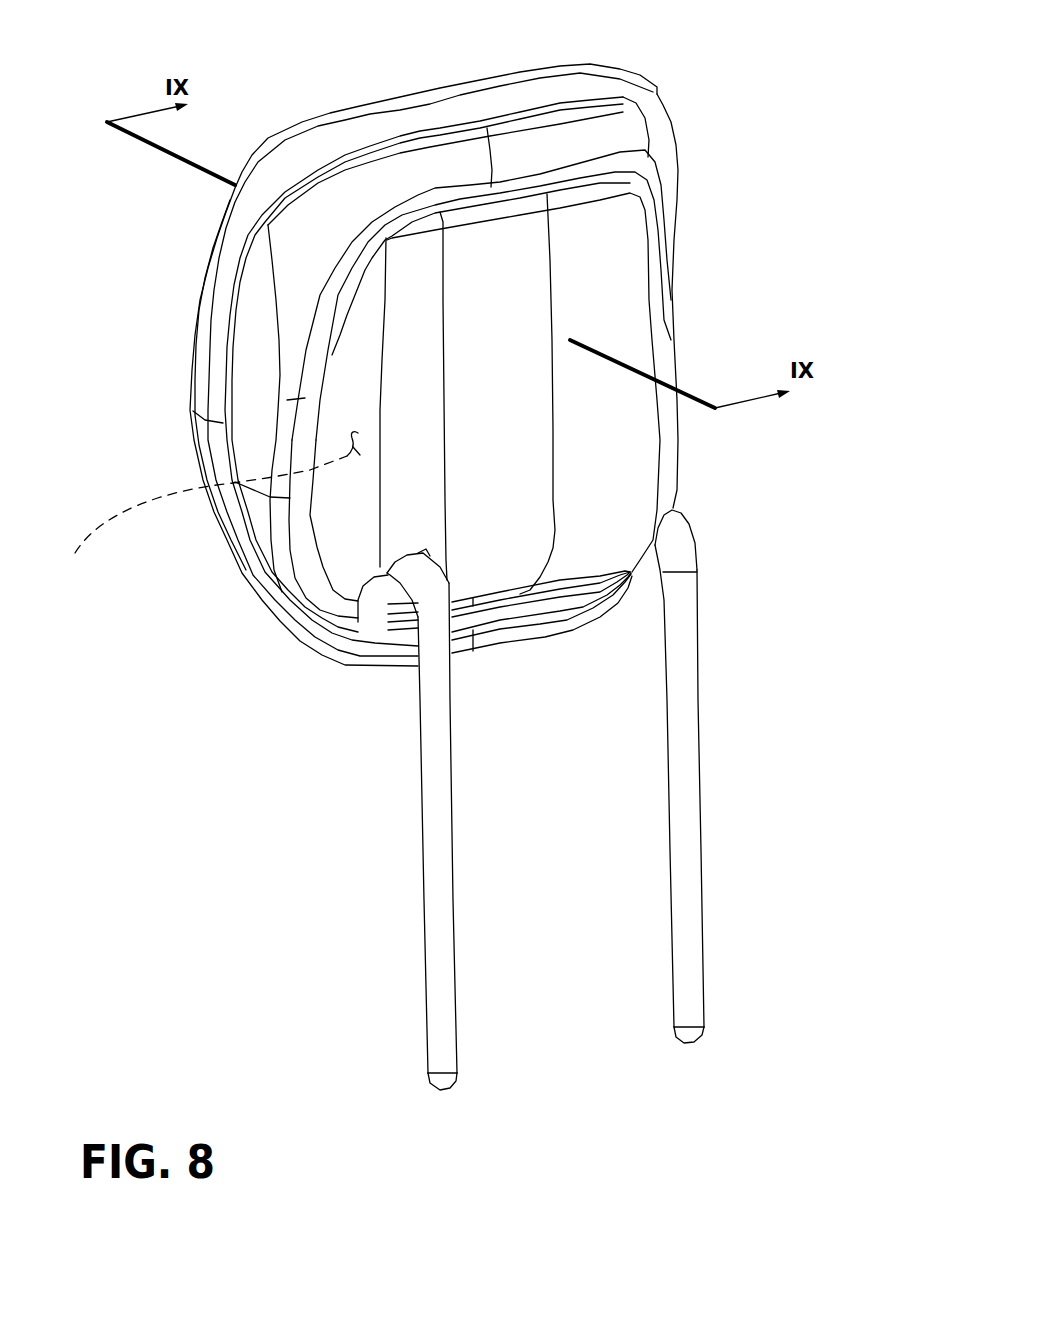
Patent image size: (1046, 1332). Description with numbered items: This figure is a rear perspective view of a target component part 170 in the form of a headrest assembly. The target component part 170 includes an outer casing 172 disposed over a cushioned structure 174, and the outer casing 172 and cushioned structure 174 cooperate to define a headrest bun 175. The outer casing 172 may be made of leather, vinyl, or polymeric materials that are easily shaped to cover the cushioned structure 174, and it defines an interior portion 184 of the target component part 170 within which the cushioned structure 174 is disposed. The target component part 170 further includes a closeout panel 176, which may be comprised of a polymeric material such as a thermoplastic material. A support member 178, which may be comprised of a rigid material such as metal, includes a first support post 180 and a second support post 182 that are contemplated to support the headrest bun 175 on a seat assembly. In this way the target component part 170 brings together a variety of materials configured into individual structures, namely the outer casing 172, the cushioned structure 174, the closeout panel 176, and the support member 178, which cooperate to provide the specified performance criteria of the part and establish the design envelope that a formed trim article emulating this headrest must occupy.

The target component part 170 is at (728, 70).
The outer casing 172 is at (193, 347).
The cushioned structure 174 is at (650, 125).
The headrest bun 175 is at (186, 213).
The closeout panel 176 is at (580, 438).
The support member 178 is at (742, 763).
The first support post 180 is at (442, 802).
The second support post 182 is at (683, 789).
The interior portion 184 is at (206, 510).